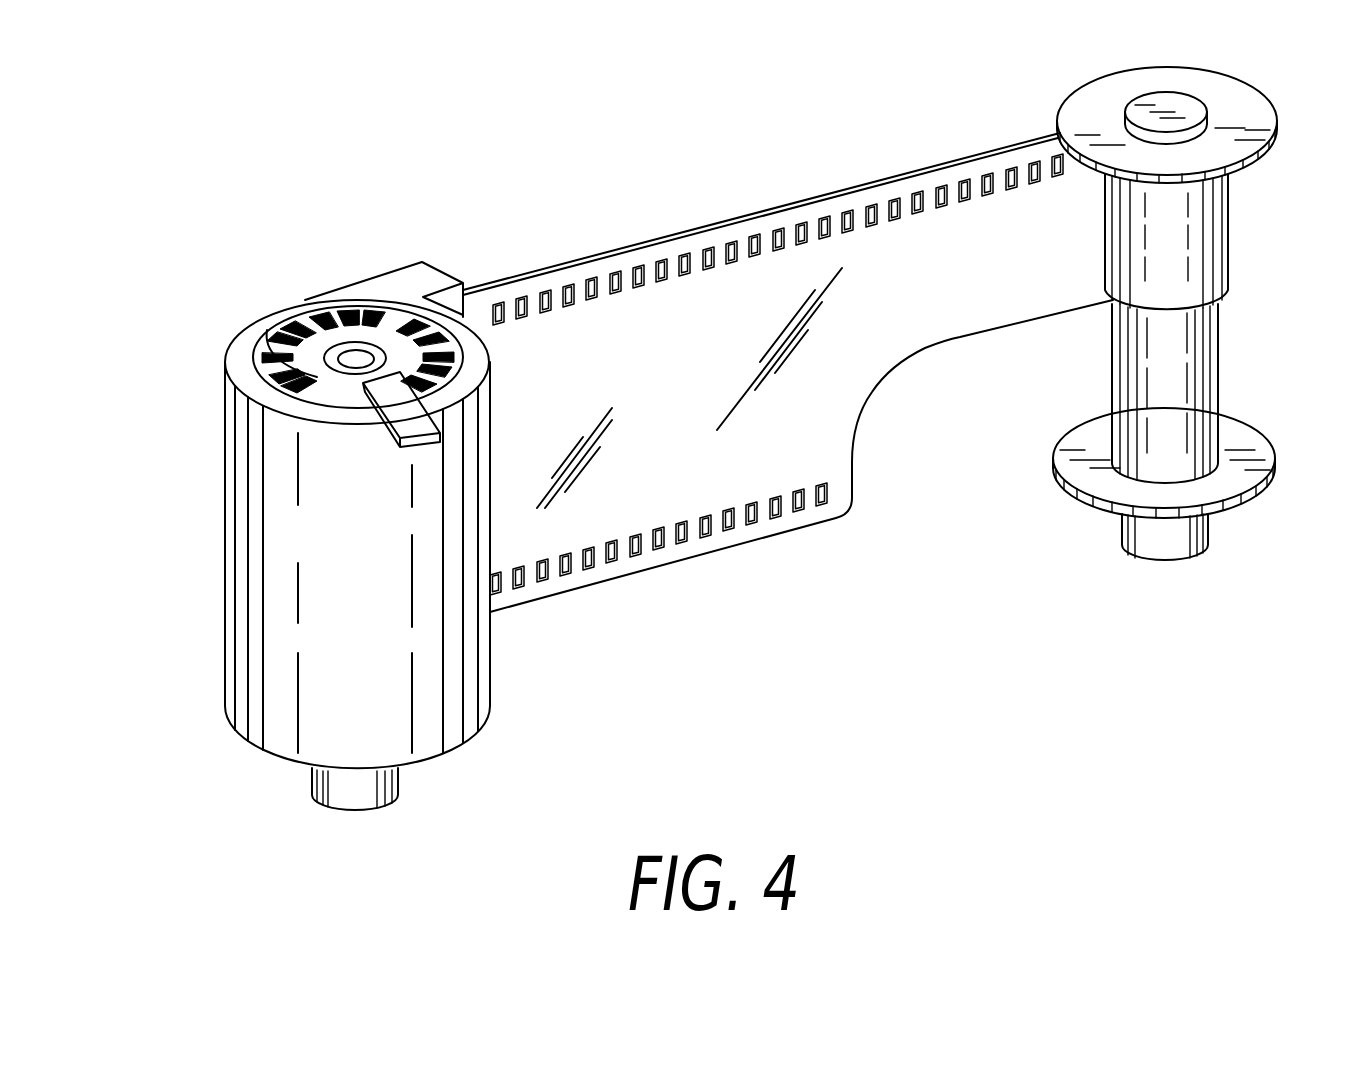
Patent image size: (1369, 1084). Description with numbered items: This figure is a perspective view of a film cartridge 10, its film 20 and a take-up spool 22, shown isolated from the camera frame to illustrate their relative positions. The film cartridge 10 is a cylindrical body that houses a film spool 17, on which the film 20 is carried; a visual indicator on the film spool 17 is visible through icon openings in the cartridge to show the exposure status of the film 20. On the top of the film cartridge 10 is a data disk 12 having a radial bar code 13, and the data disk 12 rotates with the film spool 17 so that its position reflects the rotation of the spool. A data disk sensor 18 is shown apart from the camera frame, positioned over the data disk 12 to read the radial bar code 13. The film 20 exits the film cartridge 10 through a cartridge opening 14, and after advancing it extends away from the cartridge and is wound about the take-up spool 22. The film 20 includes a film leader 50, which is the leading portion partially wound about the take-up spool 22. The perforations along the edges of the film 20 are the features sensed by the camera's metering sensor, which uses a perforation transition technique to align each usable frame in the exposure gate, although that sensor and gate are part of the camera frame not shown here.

The film cartridge 10 is at (282, 725).
The data disk 12 is at (253, 343).
The radial bar code 13 is at (378, 308).
The film spool 17 is at (343, 352).
The data disk sensor 18 is at (400, 372).
The cartridge opening 14 is at (448, 275).
The film 20 is at (727, 223).
The film leader 50 is at (1050, 210).
The take-up spool 22 is at (1197, 371).